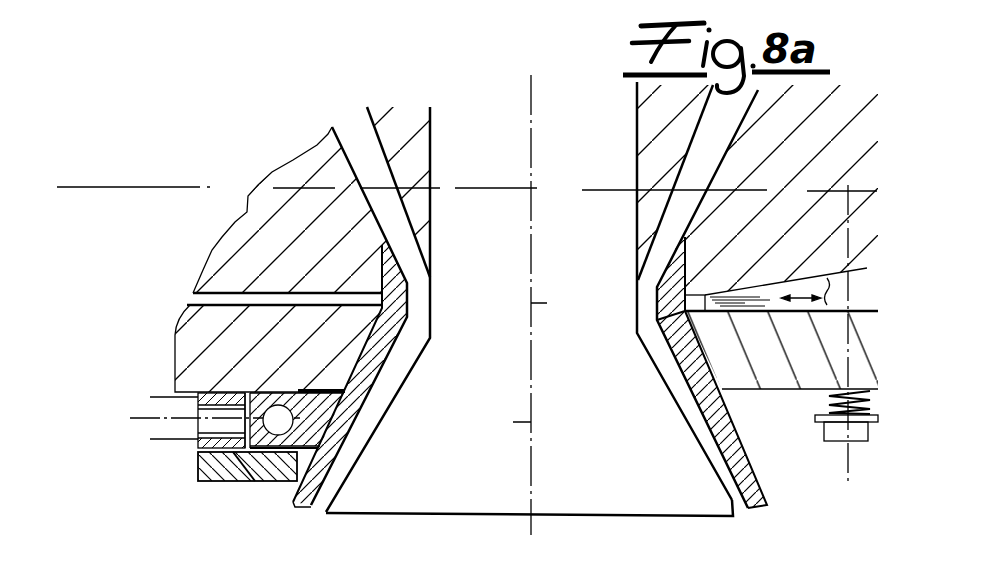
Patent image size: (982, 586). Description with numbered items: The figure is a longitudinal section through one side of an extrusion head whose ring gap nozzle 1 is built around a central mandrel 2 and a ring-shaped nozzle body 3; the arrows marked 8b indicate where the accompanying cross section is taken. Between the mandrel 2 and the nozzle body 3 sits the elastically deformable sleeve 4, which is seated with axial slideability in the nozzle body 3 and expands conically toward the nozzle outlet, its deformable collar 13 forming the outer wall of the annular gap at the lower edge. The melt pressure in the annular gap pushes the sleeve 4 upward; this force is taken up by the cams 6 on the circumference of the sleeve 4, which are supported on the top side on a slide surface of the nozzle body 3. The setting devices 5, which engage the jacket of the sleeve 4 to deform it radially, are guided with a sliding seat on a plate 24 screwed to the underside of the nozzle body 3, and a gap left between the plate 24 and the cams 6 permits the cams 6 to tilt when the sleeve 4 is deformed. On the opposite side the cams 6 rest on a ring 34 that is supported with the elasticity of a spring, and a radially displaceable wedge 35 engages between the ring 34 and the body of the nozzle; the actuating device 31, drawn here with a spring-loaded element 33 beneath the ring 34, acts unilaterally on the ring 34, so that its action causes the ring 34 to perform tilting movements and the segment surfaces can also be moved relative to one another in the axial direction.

The ring gap nozzle 1 is at (230, 143).
The mandrel 2 is at (482, 447).
The nozzle body 3 is at (253, 248).
The elastically deformable sleeve 4 is at (413, 307).
The setting devices 5 is at (175, 442).
The cams 6 is at (226, 469).
The deformable collar 13 is at (320, 478).
The plate 24 is at (241, 470).
The actuating device 31 is at (811, 471).
The screw 33 is at (857, 433).
The ring 34 is at (782, 372).
The wedge 35 is at (765, 289).
The section line 8b is at (139, 372).